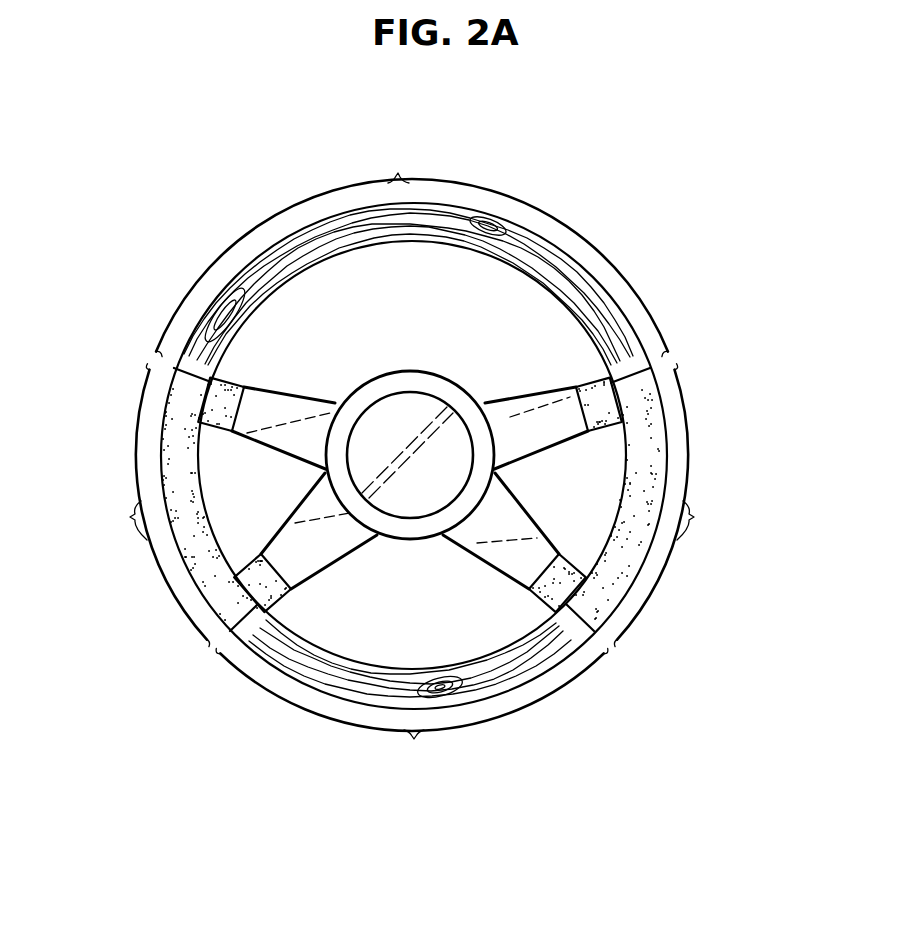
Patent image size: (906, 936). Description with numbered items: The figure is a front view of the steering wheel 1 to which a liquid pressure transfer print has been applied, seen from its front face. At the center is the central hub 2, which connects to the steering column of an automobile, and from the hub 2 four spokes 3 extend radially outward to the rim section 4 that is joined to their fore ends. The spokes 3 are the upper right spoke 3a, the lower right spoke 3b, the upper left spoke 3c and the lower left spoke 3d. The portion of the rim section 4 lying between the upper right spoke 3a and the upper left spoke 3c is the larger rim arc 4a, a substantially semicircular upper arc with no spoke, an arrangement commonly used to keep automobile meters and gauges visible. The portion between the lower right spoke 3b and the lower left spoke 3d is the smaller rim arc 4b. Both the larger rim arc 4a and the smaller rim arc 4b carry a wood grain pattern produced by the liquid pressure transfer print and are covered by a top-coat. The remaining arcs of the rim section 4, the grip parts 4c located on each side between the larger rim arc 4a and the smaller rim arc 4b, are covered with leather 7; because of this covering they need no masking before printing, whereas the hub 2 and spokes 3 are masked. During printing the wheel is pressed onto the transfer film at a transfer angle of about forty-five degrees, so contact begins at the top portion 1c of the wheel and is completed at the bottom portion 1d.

The steering wheel 1 is at (717, 205).
The top portion 1c is at (422, 205).
The bottom portion 1d is at (400, 708).
The central hub 2 is at (420, 384).
The spokes 3 is at (608, 493).
The upper right spoke 3a is at (532, 443).
The lower right spoke 3b is at (517, 558).
The upper left spoke 3c is at (265, 436).
The lower left spoke 3d is at (300, 563).
The rim section 4 is at (444, 166).
The larger rim arc 4a is at (408, 248).
The smaller rim arc 4b is at (410, 706).
The grip parts 4c is at (402, 525).
The leather 7 is at (655, 602).